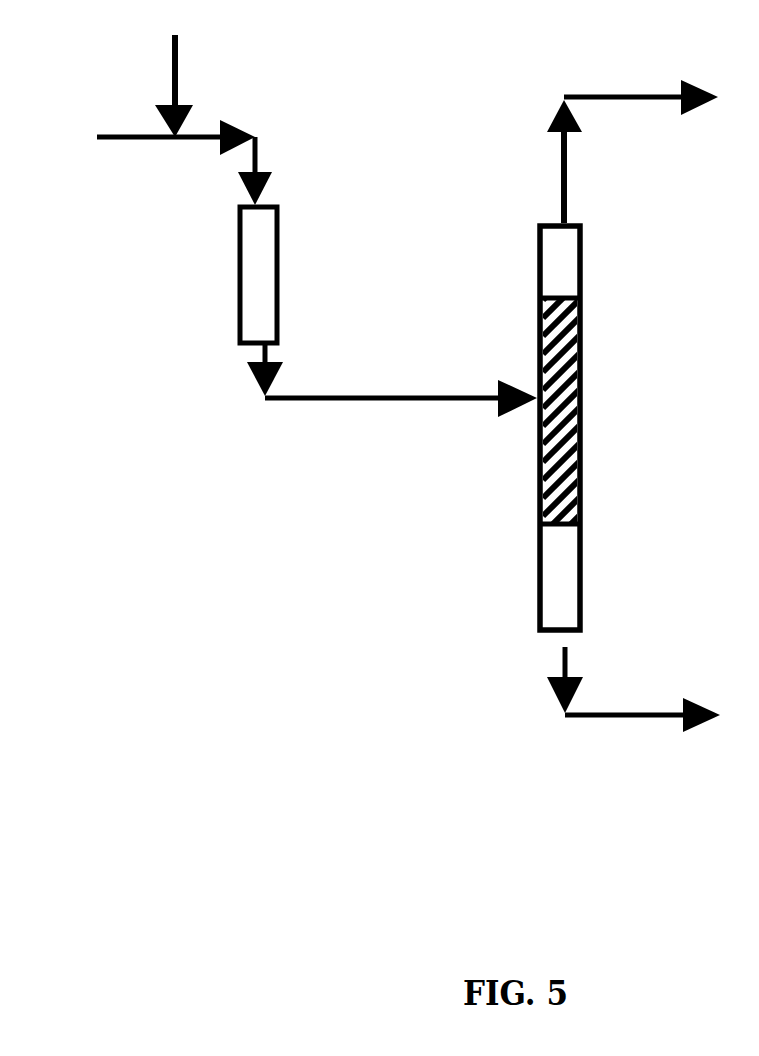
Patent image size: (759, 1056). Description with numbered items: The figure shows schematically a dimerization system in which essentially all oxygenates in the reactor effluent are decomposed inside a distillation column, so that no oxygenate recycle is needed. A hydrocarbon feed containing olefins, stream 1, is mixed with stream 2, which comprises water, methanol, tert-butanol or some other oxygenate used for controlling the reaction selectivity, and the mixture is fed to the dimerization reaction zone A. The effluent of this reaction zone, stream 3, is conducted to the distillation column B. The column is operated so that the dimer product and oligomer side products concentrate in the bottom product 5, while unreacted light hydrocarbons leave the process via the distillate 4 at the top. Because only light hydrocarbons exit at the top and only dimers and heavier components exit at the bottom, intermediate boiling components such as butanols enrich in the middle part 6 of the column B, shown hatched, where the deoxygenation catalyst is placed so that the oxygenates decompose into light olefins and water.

The hydrocarbon feed stream 1 is at (146, 145).
The oxygenate stream 2 is at (202, 78).
The dimerization reactor effluent stream 3 is at (392, 407).
The distillate 4 is at (632, 129).
The bottom product 5 is at (633, 726).
The middle part of the column 6 is at (568, 452).
The dimerization reaction zone A is at (283, 275).
The distillation column B is at (591, 428).